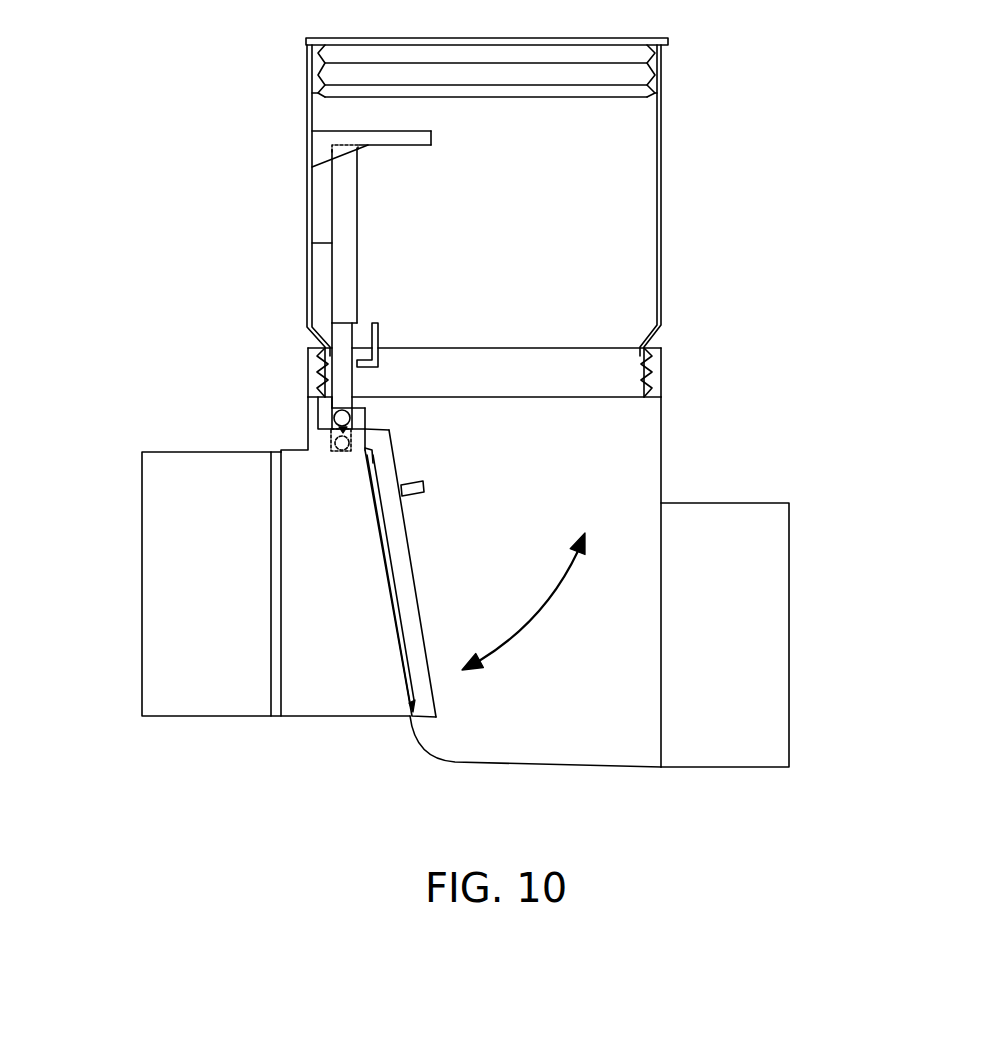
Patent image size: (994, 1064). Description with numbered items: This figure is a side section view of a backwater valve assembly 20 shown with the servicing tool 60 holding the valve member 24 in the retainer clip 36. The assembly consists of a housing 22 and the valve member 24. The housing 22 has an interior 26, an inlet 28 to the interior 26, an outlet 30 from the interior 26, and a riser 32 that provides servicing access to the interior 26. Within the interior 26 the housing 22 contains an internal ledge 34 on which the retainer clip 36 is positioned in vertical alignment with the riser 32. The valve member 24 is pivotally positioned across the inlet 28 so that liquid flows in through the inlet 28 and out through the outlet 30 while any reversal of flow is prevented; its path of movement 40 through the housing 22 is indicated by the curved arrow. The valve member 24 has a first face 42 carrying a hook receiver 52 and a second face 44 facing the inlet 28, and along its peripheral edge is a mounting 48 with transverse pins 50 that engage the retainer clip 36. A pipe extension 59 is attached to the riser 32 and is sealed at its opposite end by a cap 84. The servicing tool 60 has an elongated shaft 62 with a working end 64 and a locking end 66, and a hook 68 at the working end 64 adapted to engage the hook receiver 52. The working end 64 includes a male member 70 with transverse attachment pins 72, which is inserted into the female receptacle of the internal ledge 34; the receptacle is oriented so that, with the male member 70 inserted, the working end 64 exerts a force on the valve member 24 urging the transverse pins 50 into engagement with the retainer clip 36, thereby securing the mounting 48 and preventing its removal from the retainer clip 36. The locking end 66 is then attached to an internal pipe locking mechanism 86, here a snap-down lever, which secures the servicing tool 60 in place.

The backwater valve assembly 20 is at (447, 446).
The housing 22 is at (660, 430).
The valve member 24 is at (407, 625).
The interior 26 is at (604, 756).
The inlet 28 is at (197, 712).
The outlet 30 is at (723, 767).
The riser 32 is at (656, 403).
The internal ledge 34 is at (320, 404).
The retainer clip 36 is at (341, 446).
The path of movement 40 is at (562, 598).
The first face 42 is at (412, 527).
The second face 44 is at (400, 622).
The mounting 48 is at (342, 416).
The transverse pins 50 is at (334, 440).
The hook receiver 52 is at (425, 487).
The pipe extension 59 is at (662, 140).
The servicing tool 60 is at (330, 199).
The elongated shaft 62 is at (312, 243).
The working end 64 is at (333, 402).
The locking end 66 is at (333, 150).
The hook 68 is at (378, 335).
The male member 70 is at (338, 409).
The transverse attachment pins 72 is at (343, 428).
The cap 84 is at (672, 39).
The internal pipe locking mechanism 86 is at (432, 138).